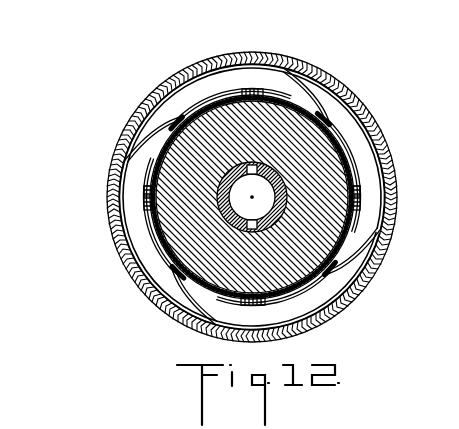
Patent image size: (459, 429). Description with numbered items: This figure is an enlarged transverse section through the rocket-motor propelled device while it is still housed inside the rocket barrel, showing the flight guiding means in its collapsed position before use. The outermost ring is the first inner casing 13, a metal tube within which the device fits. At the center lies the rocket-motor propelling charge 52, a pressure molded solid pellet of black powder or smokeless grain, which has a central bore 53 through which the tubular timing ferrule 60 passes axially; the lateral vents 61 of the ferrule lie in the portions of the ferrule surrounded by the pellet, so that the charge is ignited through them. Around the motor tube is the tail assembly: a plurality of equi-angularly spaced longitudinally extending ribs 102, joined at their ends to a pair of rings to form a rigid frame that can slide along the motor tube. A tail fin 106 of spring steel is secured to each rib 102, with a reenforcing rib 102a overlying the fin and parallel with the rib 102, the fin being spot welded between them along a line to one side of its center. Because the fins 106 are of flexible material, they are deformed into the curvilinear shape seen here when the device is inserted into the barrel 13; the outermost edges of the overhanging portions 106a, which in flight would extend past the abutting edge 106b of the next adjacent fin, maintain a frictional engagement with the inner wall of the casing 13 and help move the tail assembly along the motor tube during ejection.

The first inner casing 13 is at (270, 56).
The rocket-motor propelling charge 52 is at (287, 189).
The central bore 53 is at (223, 225).
The tubular timing ferrule 60 is at (342, 157).
The lateral vents 61 is at (246, 165).
The longitudinally extending ribs 102 is at (147, 212).
The reenforcing ribs 102a is at (147, 192).
The tail fins 106 is at (352, 160).
The overhang 106a is at (145, 135).
The abutting edge 106b is at (177, 117).